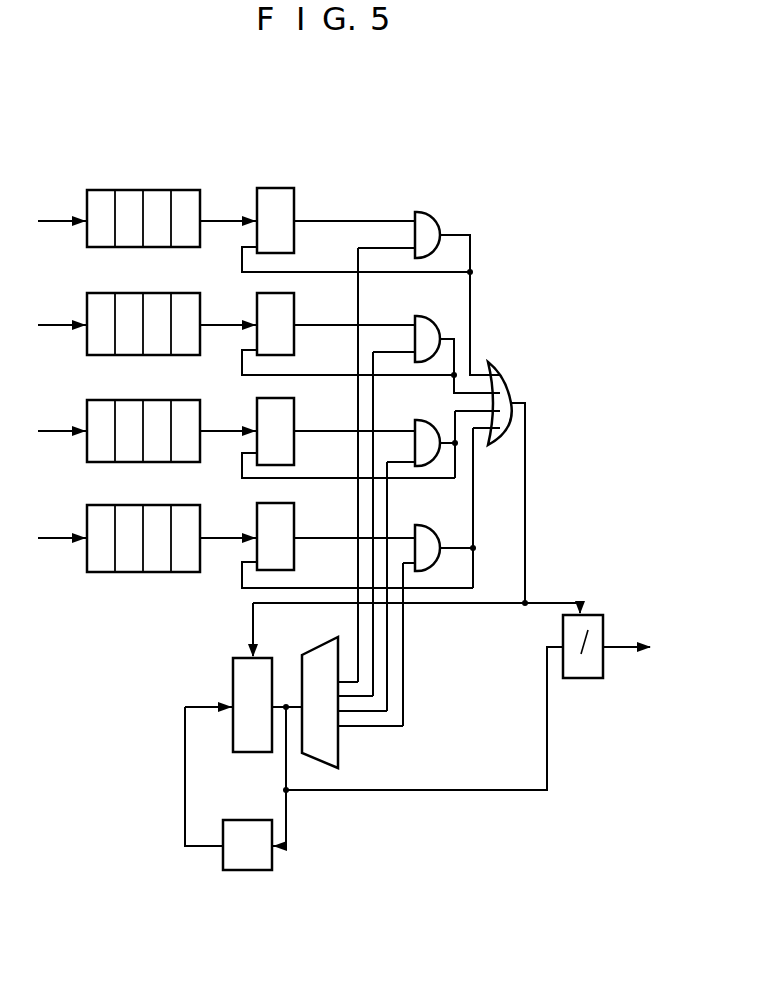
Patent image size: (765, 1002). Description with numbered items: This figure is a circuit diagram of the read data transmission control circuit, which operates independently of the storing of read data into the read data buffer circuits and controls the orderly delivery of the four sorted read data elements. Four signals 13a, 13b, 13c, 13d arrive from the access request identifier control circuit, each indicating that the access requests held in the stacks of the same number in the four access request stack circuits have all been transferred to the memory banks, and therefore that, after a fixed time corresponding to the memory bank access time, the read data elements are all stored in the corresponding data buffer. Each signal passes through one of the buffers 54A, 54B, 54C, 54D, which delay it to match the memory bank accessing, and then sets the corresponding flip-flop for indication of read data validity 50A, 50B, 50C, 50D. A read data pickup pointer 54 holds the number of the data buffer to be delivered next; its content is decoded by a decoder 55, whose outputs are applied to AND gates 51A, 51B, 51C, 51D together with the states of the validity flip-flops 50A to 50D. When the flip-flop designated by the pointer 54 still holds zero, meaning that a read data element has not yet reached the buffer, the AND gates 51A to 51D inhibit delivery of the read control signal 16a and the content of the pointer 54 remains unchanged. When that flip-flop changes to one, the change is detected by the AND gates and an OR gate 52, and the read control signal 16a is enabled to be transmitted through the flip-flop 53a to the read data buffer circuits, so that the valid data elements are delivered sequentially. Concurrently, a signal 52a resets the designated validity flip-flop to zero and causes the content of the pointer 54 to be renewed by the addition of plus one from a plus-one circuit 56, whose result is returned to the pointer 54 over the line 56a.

The signal 13a is at (55, 220).
The signal 13b is at (55, 325).
The signal 13c is at (55, 431).
The signal 13d is at (55, 538).
The buffer 54A is at (137, 190).
The buffer 54B is at (137, 289).
The buffer 54C is at (137, 398).
The buffer 54D is at (140, 505).
The flip-flop for indication of read data validity 50A is at (296, 229).
The flip-flop for indication of read data validity 50B is at (296, 333).
The flip-flop for indication of read data validity 50C is at (296, 437).
The flip-flop for indication of read data validity 50D is at (296, 543).
The AND gate 51A is at (430, 212).
The AND gate 51B is at (421, 316).
The AND gate 51C is at (421, 400).
The AND gate 51D is at (429, 524).
The OR gate 52 is at (504, 380).
The signal 52a is at (462, 606).
The flip-flop 53a is at (588, 613).
The control signal 16a is at (620, 650).
The read data pickup pointer 54 is at (233, 723).
The decoder 55 is at (340, 740).
The +1 circuit 56 is at (273, 862).
The feedback line 56a is at (185, 762).